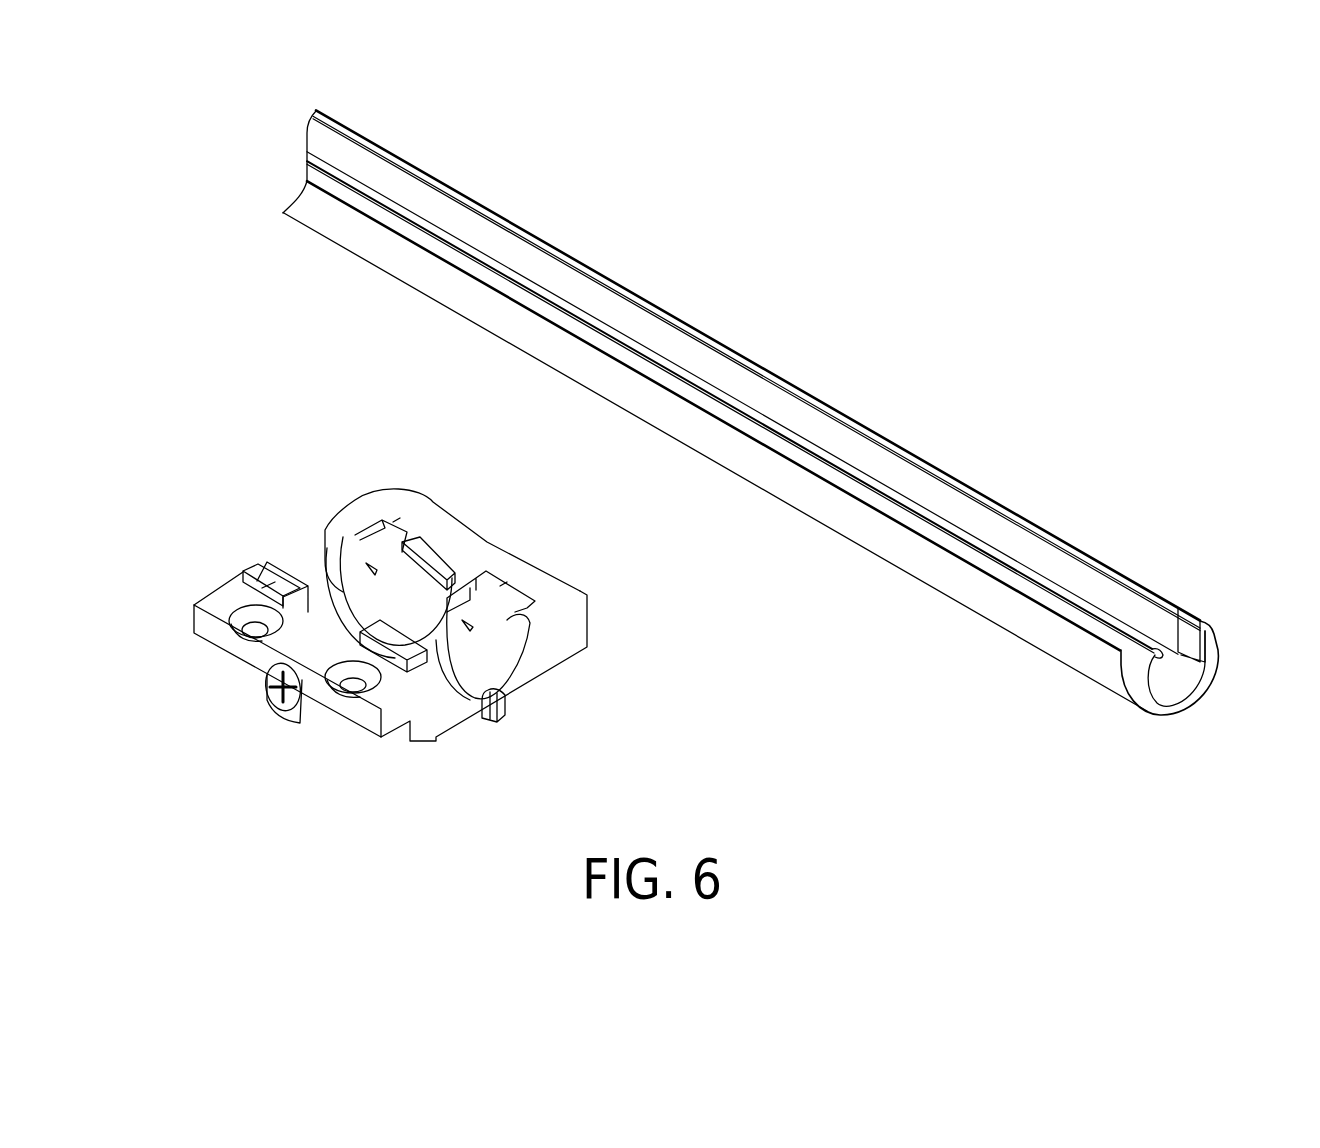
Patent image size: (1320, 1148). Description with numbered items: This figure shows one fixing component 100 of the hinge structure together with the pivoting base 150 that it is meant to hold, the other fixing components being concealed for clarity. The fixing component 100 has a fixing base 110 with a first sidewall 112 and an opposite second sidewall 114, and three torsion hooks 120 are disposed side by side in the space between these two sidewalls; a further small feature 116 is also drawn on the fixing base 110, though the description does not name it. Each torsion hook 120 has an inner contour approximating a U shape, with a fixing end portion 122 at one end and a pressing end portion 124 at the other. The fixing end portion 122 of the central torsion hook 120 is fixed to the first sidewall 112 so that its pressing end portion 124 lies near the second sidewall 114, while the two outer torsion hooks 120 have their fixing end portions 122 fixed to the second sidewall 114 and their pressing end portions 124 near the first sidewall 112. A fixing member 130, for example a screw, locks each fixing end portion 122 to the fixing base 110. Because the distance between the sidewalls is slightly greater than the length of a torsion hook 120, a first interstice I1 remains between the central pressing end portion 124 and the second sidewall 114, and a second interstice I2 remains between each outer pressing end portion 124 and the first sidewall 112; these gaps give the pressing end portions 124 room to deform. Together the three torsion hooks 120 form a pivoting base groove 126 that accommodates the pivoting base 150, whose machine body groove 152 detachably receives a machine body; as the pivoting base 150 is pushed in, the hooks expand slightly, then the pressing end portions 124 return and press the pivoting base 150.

The fixing component 100 is at (1264, 856).
The fixing base 110 is at (399, 593).
The first sidewall 112 is at (240, 640).
The second sidewall 114 is at (426, 525).
The positioning pin 116 is at (498, 709).
The torsion hook 120 is at (353, 424).
The fixing end portion 122 is at (375, 522).
The pressing end portion 124 is at (278, 562).
The pivoting base groove 126 is at (300, 575).
The fixing member 130 is at (285, 703).
The pivoting base 150 is at (750, 412).
The machine body groove 152 is at (750, 388).
The first interstice I1 is at (262, 588).
The second interstice I2 is at (390, 512).